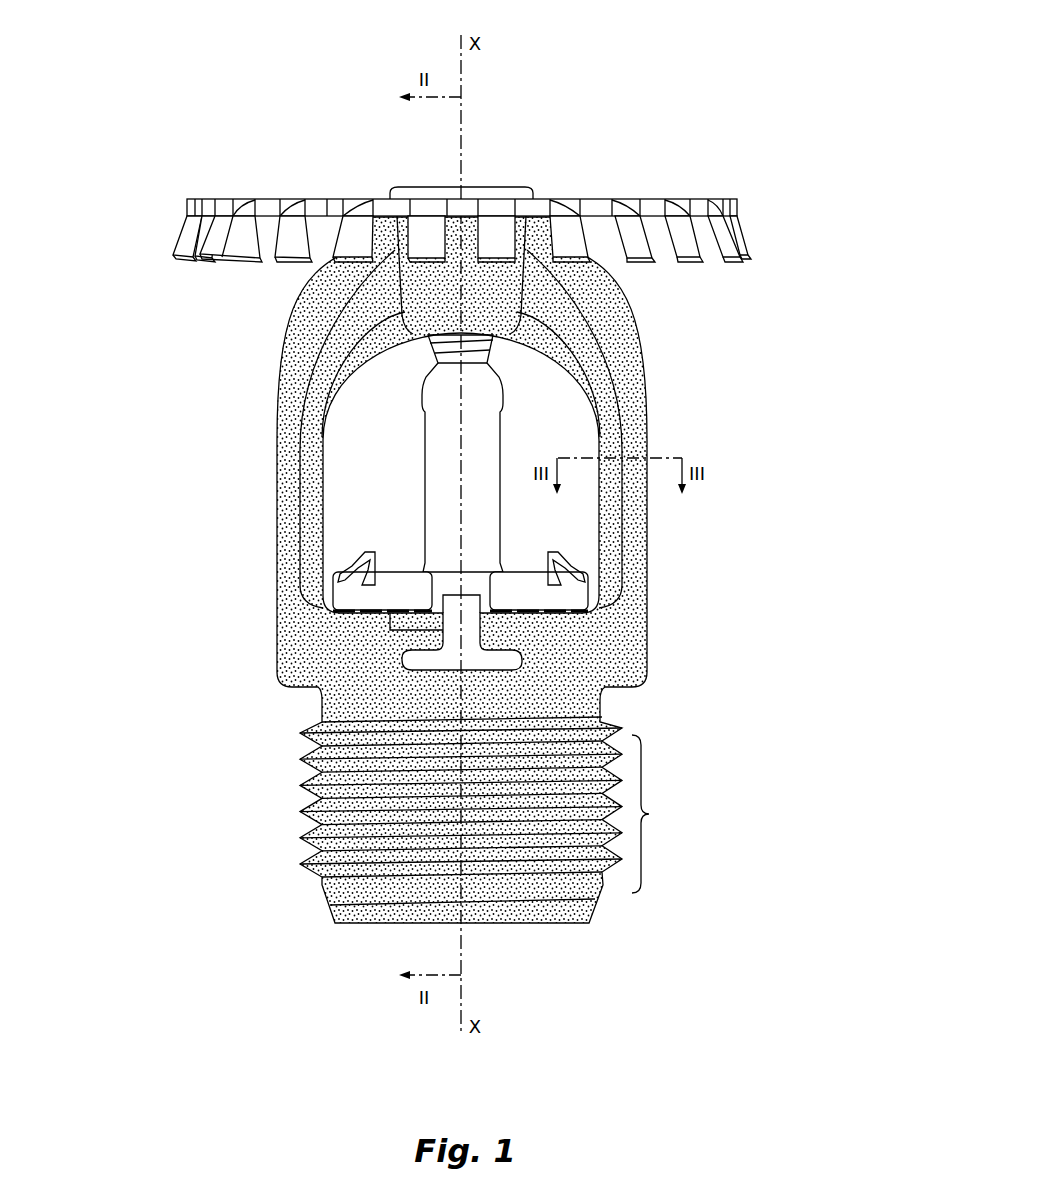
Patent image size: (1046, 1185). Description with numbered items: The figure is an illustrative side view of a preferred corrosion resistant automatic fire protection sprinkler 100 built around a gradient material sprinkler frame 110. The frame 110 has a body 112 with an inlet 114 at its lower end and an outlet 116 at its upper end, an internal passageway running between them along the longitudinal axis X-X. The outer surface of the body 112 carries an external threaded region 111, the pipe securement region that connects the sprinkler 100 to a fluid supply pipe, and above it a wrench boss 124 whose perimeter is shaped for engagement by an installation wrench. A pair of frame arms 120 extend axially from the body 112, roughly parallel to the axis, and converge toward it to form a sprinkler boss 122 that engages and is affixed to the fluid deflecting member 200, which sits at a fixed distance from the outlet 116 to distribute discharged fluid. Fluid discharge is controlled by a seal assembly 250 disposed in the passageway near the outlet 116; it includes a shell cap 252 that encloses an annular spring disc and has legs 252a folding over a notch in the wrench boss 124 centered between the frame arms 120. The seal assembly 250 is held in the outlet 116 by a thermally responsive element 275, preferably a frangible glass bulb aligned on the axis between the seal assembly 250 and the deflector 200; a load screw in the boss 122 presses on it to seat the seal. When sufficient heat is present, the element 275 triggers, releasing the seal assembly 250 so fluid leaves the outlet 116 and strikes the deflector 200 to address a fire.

The corrosion resistant automatic fire protection sprinkler 100 is at (462, 495).
The fluid deflecting member 200 is at (232, 198).
The gradient material sprinkler frame 110 is at (640, 327).
The frame arms 120 is at (277, 417).
The sprinkler boss 122 is at (420, 292).
The wrench boss 124 is at (305, 640).
The outlet 116 is at (400, 562).
The thermally responsive element 275 is at (500, 495).
The seal assembly 250 is at (352, 583).
The shell cap 252 is at (570, 598).
The legs 252a is at (510, 660).
The body 112 is at (310, 806).
The external threaded region 111 is at (660, 814).
The inlet 114 is at (560, 941).